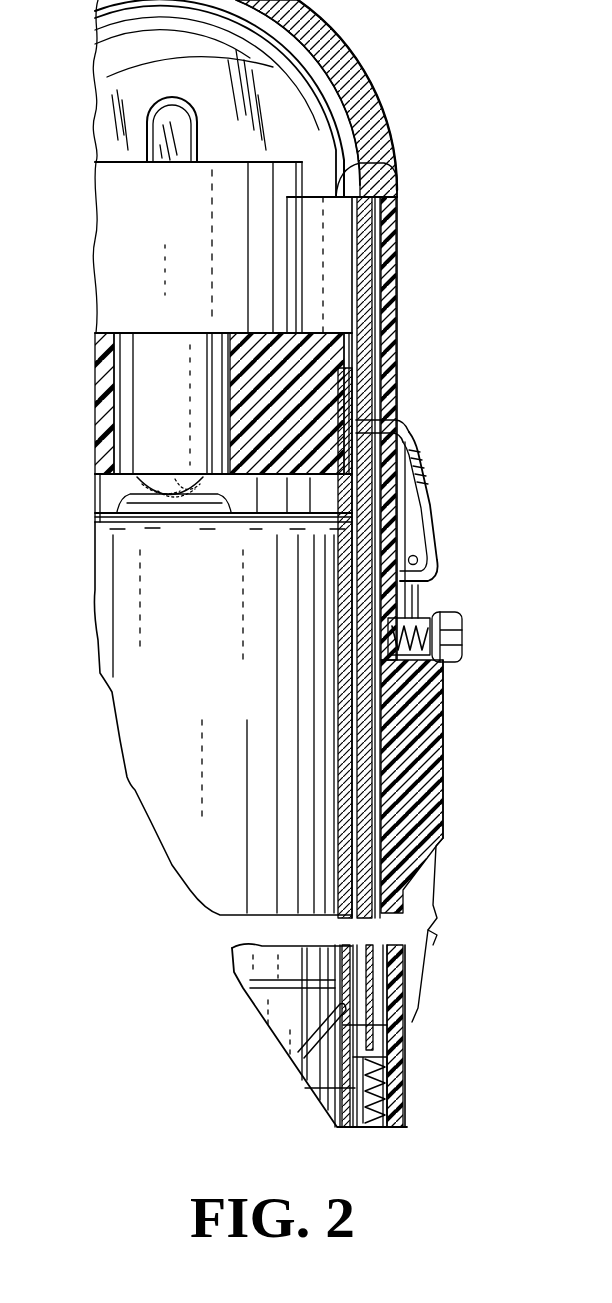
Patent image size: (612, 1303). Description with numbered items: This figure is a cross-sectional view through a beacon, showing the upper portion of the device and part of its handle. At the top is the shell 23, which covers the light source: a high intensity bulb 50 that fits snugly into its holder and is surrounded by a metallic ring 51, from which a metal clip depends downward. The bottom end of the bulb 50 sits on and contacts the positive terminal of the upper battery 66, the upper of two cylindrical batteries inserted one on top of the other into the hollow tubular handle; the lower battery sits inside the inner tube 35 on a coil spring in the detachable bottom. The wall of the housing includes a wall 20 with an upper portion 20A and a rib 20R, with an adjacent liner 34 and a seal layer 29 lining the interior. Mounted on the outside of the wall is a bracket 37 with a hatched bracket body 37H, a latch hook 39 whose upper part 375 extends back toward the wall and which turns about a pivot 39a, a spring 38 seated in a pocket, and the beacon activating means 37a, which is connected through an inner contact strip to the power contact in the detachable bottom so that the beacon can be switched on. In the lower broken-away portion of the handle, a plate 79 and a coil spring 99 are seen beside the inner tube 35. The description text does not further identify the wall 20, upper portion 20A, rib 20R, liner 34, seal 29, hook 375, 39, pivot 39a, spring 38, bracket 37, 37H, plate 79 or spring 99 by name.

The shell 23 is at (385, 122).
The upper wall portion 20A is at (388, 169).
The housing wall 20 is at (383, 229).
The wall liner 34 is at (386, 263).
The wall rib 20R is at (376, 351).
The seal layer 29 is at (378, 385).
The bulb 50 is at (168, 112).
The metallic ring 51 is at (245, 330).
The hook top 375 is at (399, 428).
The latch hook 39 is at (428, 463).
The pivot 39a is at (416, 557).
The spring 38 is at (420, 630).
The beacon activating means 37a is at (463, 643).
The bracket body 37H is at (430, 722).
The bracket 37 is at (456, 769).
The upper battery 66 is at (127, 690).
The inner tube 35 is at (388, 1024).
The plate 79 is at (388, 1041).
The coil spring 99 is at (405, 1078).